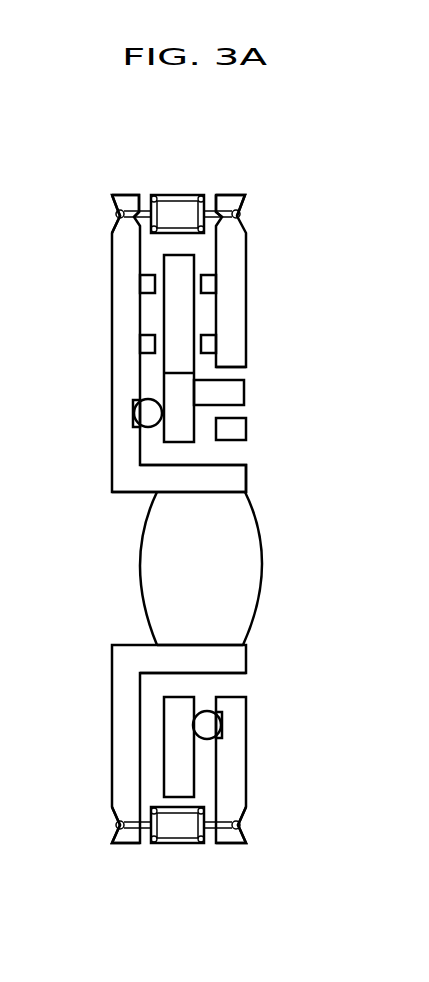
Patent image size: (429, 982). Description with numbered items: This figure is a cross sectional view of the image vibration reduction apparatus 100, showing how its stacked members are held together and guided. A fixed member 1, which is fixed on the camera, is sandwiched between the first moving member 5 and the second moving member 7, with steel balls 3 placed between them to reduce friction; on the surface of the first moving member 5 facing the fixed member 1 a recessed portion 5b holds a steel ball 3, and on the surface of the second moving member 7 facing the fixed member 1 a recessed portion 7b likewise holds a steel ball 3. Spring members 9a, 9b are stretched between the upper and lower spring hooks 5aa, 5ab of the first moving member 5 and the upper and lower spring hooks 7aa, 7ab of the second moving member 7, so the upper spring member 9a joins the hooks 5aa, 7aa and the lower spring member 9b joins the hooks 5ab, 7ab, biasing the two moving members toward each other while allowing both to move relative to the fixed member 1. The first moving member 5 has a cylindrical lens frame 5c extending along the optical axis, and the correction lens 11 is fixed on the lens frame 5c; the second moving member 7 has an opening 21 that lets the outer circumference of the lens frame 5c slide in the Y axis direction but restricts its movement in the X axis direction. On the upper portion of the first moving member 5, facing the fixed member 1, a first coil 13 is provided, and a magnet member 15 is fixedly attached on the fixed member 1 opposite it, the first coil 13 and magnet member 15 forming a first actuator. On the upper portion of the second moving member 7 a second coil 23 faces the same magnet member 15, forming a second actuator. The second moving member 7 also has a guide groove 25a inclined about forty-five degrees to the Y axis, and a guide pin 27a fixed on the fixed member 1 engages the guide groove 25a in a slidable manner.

The image vibration reduction apparatus 100 is at (284, 178).
The fixed member 1 is at (178, 428).
The steel balls 3 is at (148, 415).
The first moving member 5 is at (123, 365).
The upper spring hook of first moving member 5aa is at (128, 194).
The lower spring hook of first moving member 5ab is at (130, 838).
The recessed portion 5b is at (135, 403).
The lens frame 5c is at (237, 481).
The second moving member 7 is at (237, 258).
The upper spring hook of second moving member 7aa is at (227, 194).
The lower spring hook of second moving member 7ab is at (232, 843).
The recessed portion 7b is at (218, 714).
The spring member 9a is at (178, 194).
The spring member 9b is at (177, 840).
The correction lens 11 is at (157, 570).
The first coil 13 is at (147, 343).
The magnet member 15 is at (178, 262).
The opening 21 is at (238, 447).
The second coil 23 is at (208, 343).
The guide groove 25a is at (238, 373).
The guide pin 27a is at (240, 390).